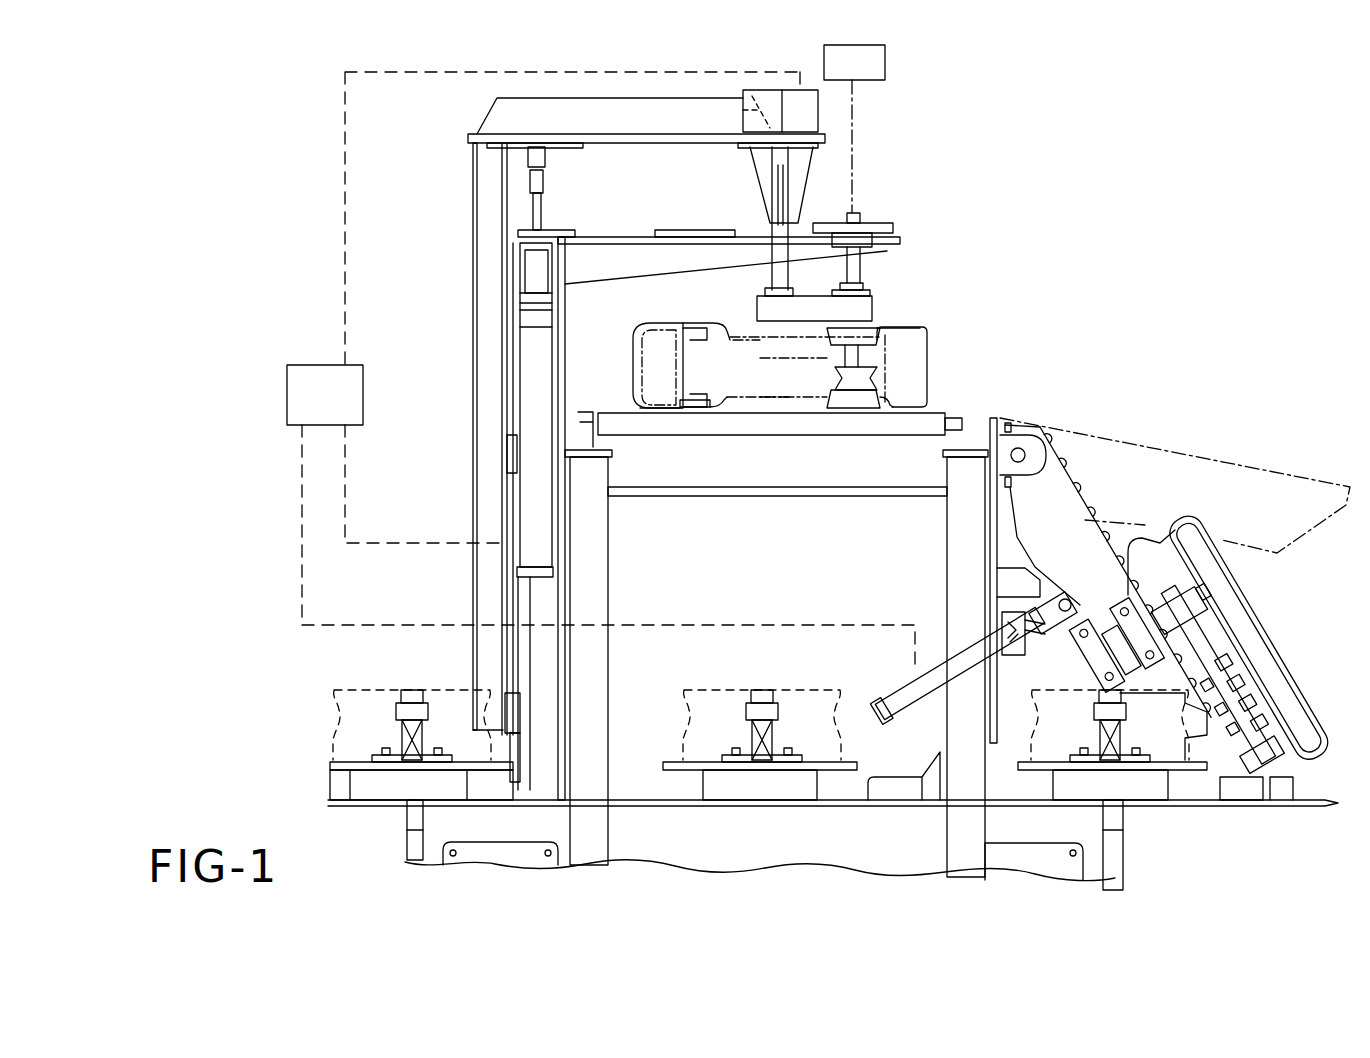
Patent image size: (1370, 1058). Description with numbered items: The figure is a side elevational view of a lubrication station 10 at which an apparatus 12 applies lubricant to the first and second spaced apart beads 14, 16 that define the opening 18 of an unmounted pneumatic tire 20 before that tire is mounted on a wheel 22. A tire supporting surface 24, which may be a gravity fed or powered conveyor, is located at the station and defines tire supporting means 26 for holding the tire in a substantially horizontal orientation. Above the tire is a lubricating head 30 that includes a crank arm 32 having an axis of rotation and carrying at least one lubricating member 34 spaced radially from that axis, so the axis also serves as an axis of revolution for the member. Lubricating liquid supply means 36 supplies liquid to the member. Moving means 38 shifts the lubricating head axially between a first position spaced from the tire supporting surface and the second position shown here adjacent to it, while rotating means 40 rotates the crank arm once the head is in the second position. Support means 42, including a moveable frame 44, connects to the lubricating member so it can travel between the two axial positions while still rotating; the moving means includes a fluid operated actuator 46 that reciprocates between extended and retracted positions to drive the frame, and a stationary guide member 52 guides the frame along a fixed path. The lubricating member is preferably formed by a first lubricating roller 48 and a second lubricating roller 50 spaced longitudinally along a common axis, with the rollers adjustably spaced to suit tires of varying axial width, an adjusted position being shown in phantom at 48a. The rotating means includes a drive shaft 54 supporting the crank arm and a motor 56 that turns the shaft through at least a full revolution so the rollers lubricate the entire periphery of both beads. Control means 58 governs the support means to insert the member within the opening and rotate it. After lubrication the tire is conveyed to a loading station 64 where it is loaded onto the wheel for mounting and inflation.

The lubrication station 10 is at (1092, 108).
The apparatus 12 is at (937, 280).
The first bead 14 is at (728, 330).
The second bead 16 is at (735, 405).
The opening 18 is at (800, 402).
The unmounted pneumatic tire 20 is at (1083, 388).
The wheel 22 is at (713, 690).
The tire supporting surface 24 is at (612, 412).
The tire supporting means 26 is at (650, 438).
The lubricating head 30 is at (868, 344).
The crank arm 32 is at (873, 300).
The lubricating member 34 is at (878, 383).
The lubricating liquid supply means 36 is at (887, 62).
The moving means 38 is at (535, 355).
The rotating means 40 is at (822, 113).
The support means 42 is at (497, 125).
The moveable frame 44 is at (600, 138).
The fluid operated actuator 46 is at (535, 392).
The first lubricating roller 48 is at (882, 327).
The first lubricating roller (adjusted position) 48a is at (958, 350).
The second lubricating roller 50 is at (856, 406).
The stationary guide member 52 is at (525, 597).
The drive shaft 54 is at (775, 278).
The motor 56 is at (795, 112).
The control means 58 is at (304, 363).
The loading station 64 is at (1338, 385).